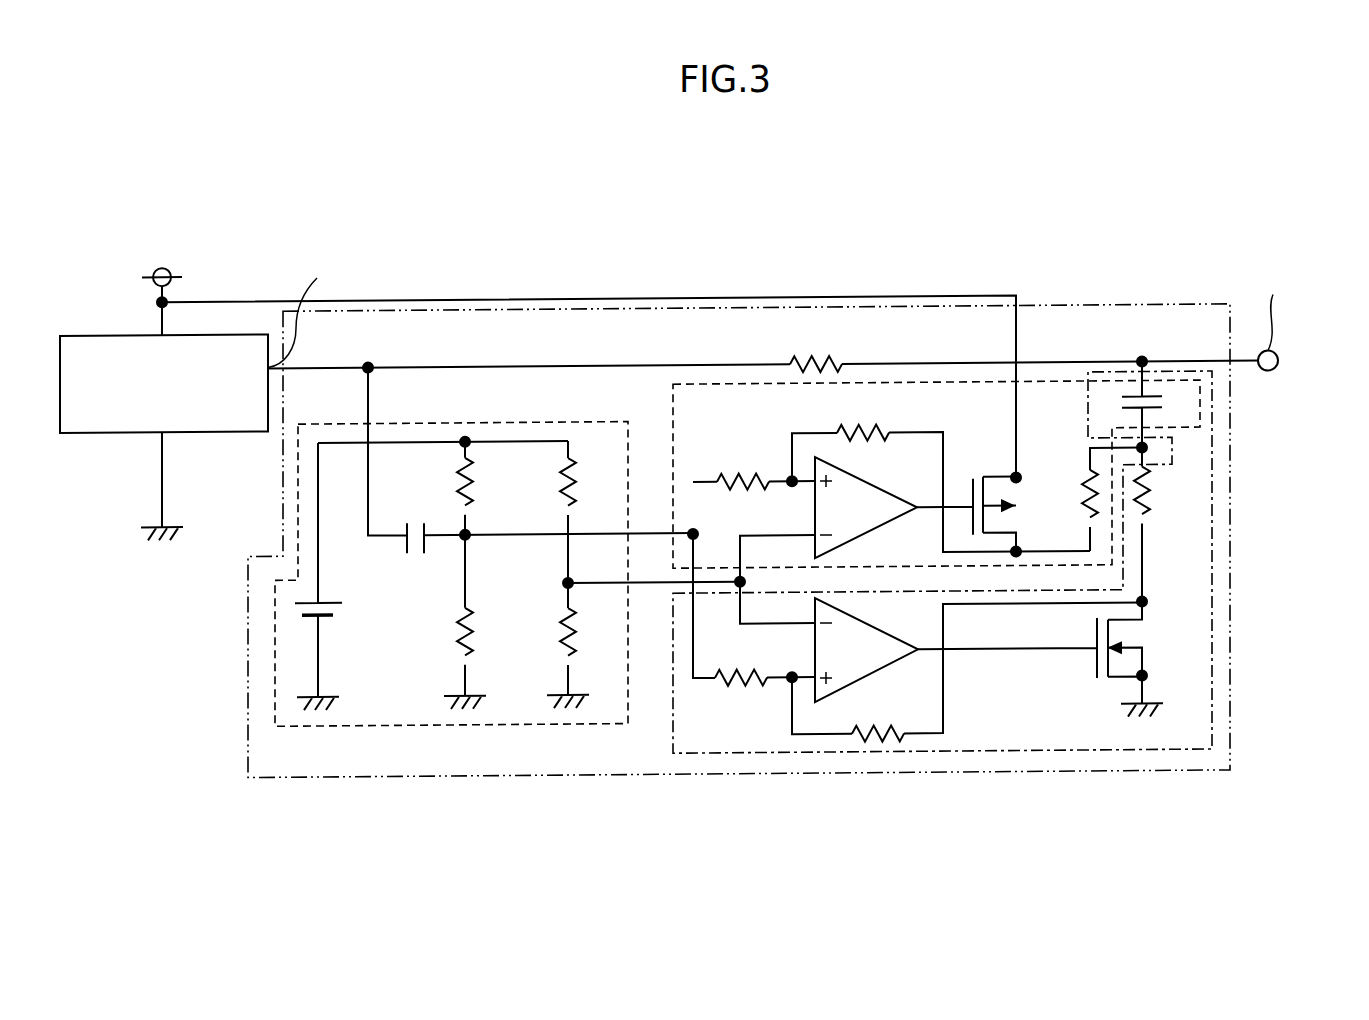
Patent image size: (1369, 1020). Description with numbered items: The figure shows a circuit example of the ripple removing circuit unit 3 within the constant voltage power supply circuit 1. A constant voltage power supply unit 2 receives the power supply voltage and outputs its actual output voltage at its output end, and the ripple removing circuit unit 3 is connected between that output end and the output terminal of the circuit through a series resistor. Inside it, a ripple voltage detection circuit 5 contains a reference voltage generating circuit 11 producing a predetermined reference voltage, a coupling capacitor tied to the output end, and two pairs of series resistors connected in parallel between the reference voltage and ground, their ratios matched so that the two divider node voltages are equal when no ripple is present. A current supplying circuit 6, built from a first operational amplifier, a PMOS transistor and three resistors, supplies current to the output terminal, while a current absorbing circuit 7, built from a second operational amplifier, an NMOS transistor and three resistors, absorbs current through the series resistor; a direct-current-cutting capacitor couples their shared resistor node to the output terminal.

The constant voltage power supply circuit 1 is at (906, 196).
The constant voltage power supply unit 2 is at (101, 429).
The ripple removing circuit unit 3 is at (1054, 300).
The ripple voltage detection circuit 5 is at (533, 421).
The current supplying circuit 6 is at (672, 428).
The current absorbing circuit 7 is at (670, 738).
The reference voltage generating circuit 11 is at (334, 609).